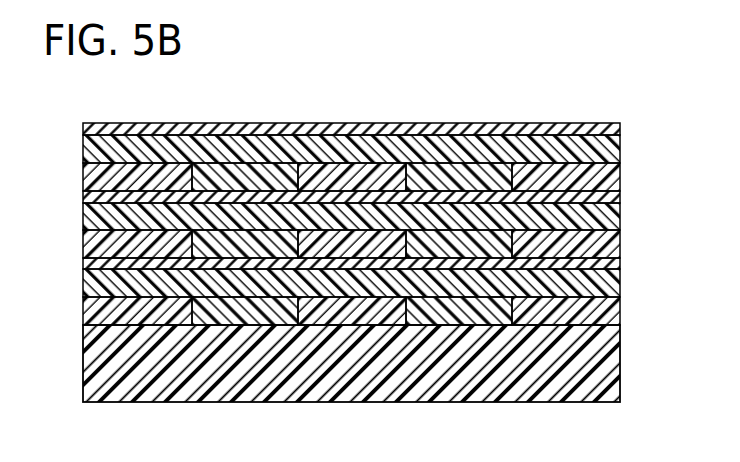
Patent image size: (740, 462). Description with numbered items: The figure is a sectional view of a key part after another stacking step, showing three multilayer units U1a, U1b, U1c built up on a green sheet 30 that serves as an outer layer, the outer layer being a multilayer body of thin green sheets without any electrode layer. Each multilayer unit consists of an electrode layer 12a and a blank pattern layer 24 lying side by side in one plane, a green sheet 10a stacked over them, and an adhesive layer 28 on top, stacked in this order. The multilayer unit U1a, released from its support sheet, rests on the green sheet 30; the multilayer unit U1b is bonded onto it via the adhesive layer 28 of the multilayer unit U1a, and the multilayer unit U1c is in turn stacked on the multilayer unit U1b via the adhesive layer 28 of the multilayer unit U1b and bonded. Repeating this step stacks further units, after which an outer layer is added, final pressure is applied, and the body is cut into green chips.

The adhesive layer 28 is at (608, 128).
The green sheet 10a is at (598, 156).
The blank pattern layer 24 is at (606, 178).
The electrode layer 12a is at (247, 178).
The green sheet as an outer layer 30 is at (605, 362).
The multilayer unit U1a is at (80, 259).
The multilayer unit U1b is at (80, 193).
The multilayer unit U1c is at (80, 126).